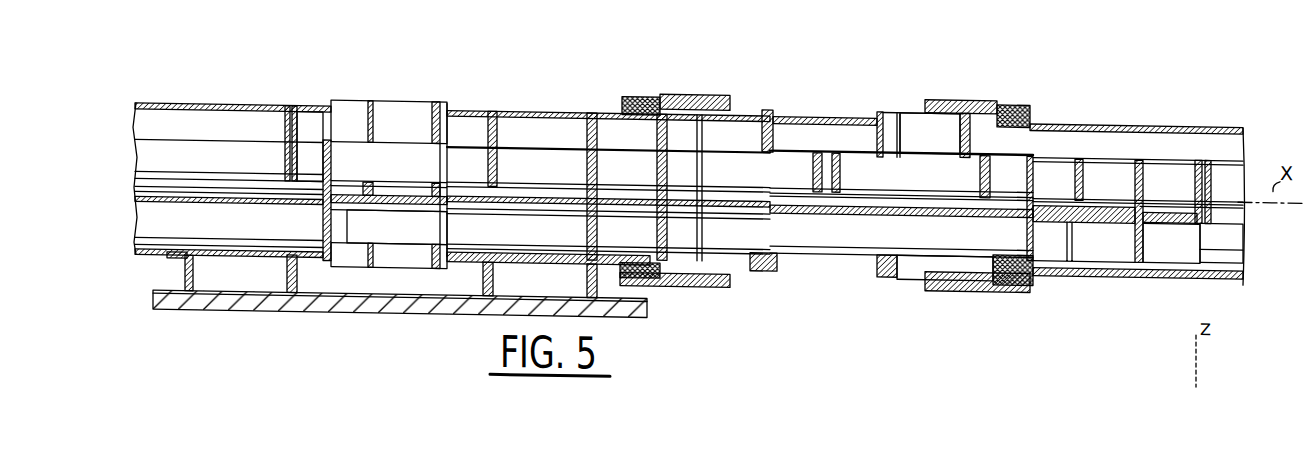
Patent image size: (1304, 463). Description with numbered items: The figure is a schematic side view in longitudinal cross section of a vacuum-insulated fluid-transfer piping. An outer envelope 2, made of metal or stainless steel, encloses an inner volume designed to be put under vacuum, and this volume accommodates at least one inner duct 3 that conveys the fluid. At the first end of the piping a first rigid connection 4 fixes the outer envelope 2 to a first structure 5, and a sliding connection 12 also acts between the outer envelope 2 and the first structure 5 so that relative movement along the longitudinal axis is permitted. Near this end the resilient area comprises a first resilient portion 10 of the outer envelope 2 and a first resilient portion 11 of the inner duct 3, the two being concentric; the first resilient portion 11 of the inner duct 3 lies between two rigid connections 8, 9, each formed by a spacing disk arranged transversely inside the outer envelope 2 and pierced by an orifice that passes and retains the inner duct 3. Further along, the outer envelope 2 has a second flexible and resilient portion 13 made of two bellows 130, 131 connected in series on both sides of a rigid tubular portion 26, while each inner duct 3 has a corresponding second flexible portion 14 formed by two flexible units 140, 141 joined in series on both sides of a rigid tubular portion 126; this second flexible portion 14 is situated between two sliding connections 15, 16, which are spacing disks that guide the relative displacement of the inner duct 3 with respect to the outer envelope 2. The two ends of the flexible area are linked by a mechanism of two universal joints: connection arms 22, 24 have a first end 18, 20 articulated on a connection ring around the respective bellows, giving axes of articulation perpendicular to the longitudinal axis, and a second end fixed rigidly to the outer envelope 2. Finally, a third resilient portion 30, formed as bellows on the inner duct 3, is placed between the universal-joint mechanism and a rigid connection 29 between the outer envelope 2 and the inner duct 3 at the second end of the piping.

The outer envelope 2 is at (1147, 100).
The inner duct 3 is at (1168, 190).
The first rigid connection 4 is at (175, 267).
The first structure 5 is at (240, 296).
The rigid connection 8 is at (283, 132).
The rigid connection 9 is at (487, 253).
The first resilient portion of the outer envelope 10 is at (370, 93).
The first resilient portion of the inner duct 11 is at (343, 161).
The sliding connection 12 is at (473, 272).
The second flexible and resilient portion of the outer envelope 13 is at (862, 81).
The second flexible portion of the inner duct 14 is at (824, 258).
The sliding connection 15 is at (590, 252).
The sliding connection 16 is at (1033, 244).
The axis of articulation 18 is at (940, 84).
The axis of articulation 20 is at (718, 80).
The connection arm 22 is at (968, 95).
The connection arm 24 is at (683, 79).
The rigid tubular portion 26 is at (827, 103).
The rigid connection 29 is at (1207, 156).
The third resilient portion 30 is at (1100, 128).
The rigid tubular portion 126 is at (828, 183).
The bellows 130 is at (755, 97).
The bellows 131 is at (923, 101).
The flexible unit 140 is at (705, 170).
The flexible unit 141 is at (923, 166).